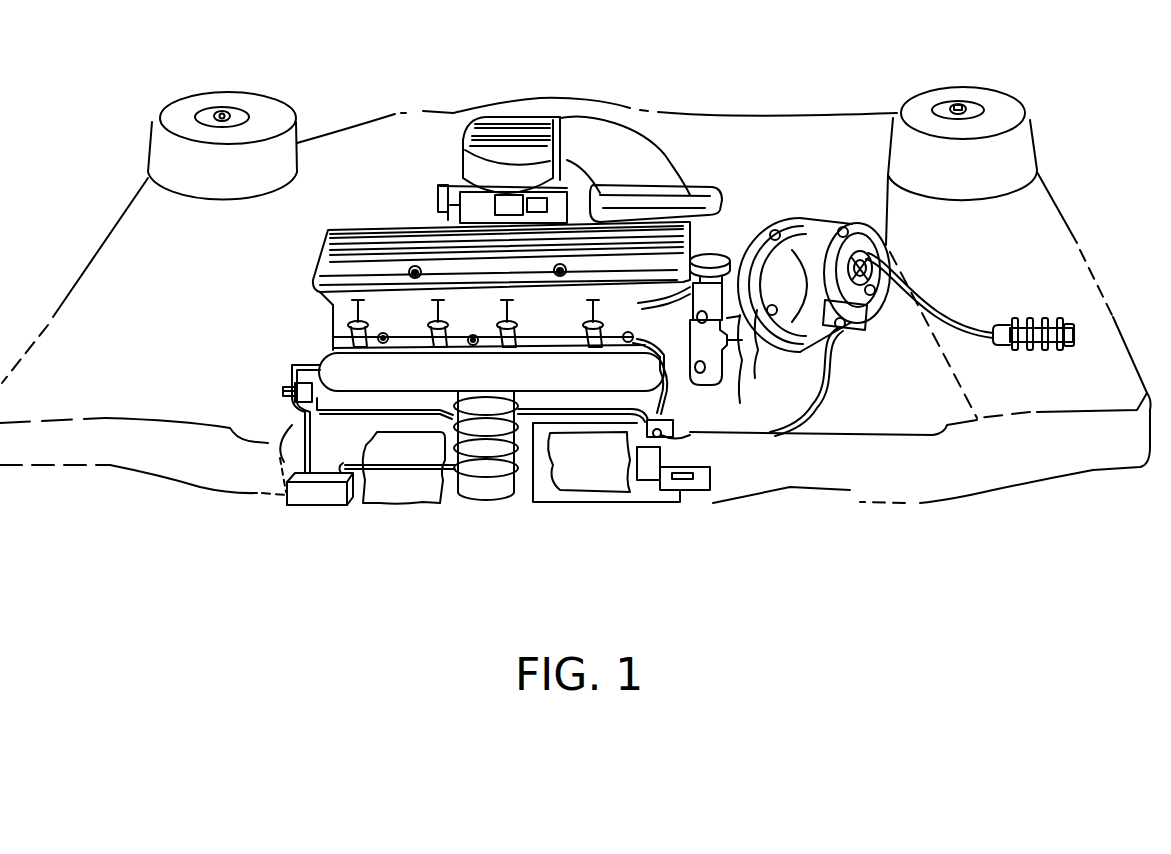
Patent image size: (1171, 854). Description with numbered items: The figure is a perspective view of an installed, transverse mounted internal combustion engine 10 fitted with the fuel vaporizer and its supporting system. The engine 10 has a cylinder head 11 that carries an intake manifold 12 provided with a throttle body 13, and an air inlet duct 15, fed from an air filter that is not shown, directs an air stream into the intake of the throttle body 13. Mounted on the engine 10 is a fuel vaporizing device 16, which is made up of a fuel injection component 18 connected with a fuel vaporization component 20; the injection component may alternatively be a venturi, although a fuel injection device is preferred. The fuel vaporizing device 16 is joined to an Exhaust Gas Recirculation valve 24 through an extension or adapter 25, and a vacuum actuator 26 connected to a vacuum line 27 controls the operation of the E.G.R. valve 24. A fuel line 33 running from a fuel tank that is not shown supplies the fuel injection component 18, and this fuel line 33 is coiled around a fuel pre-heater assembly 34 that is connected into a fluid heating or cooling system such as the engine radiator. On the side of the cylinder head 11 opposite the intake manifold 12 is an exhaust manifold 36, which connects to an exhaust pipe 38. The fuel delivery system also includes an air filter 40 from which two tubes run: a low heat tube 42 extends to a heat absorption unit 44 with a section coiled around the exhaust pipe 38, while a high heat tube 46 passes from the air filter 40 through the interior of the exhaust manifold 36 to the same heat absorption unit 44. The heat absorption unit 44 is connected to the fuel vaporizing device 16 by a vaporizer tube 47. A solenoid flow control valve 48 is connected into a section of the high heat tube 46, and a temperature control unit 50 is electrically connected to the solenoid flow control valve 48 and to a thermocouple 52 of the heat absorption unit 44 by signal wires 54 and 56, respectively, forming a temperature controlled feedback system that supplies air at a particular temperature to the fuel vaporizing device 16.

The internal combustion engine 10 is at (398, 170).
The cylinder head 11 is at (323, 300).
The intake manifold 12 is at (432, 200).
The throttle body 13 is at (452, 178).
The air inlet duct 15 is at (628, 150).
The fuel vaporizing device 16 is at (872, 332).
The fuel injection component 18 is at (830, 228).
The fuel vaporization component 20 is at (790, 280).
The E.G.R. valve 24 is at (692, 312).
The adapter 25 is at (740, 348).
The vacuum actuator 26 is at (710, 256).
The vacuum line 27 is at (640, 303).
The fuel line 33 is at (908, 288).
The fuel pre-heater assembly 34 is at (1040, 318).
The exhaust manifold 36 is at (434, 386).
The exhaust pipe 38 is at (476, 487).
The air filter 40 is at (320, 497).
The low heat tube 42 is at (403, 440).
The heat absorption unit 44 is at (627, 445).
The high heat tube 46 is at (288, 428).
The vaporizer tube 47 is at (754, 434).
The solenoid flow control valve 48 is at (283, 388).
The temperature control unit 50 is at (690, 490).
The thermocouple 52 is at (663, 430).
The signal wire 54 is at (563, 503).
The signal wire 56 is at (657, 483).